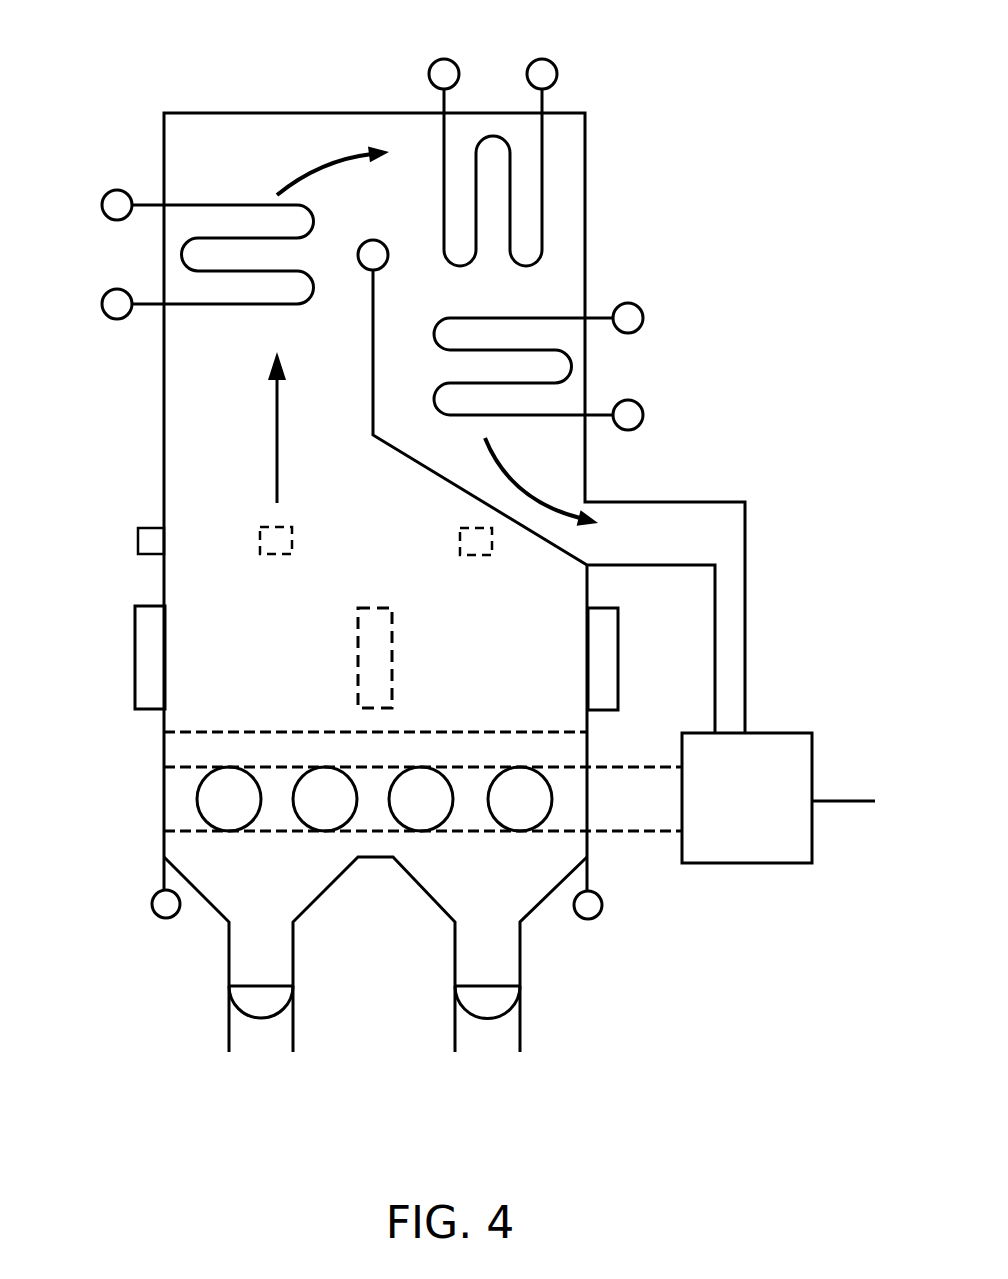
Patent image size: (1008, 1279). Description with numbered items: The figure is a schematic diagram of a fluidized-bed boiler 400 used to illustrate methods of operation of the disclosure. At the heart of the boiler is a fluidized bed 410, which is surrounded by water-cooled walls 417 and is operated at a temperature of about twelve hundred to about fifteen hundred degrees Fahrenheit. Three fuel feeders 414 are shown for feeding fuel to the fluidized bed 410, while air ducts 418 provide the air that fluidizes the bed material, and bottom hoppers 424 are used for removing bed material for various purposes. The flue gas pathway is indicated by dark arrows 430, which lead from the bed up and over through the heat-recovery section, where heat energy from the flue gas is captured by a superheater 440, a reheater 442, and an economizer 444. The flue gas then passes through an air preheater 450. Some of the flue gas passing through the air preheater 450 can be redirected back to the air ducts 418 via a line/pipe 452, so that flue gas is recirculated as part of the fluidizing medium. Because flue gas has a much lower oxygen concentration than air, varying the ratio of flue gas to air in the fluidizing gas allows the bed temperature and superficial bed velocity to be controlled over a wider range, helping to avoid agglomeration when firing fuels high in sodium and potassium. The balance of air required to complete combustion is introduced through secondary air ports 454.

The fluidized-bed boiler 400 is at (135, 69).
The fluidized bed 410 is at (312, 732).
The fuel feeders 414 is at (135, 672).
The water-cooled walls 417 is at (160, 855).
The air ducts 418 is at (203, 782).
The bottom hoppers 424 is at (230, 965).
The dark arrows 430 is at (290, 175).
The superheater 440 is at (215, 305).
The reheater 442 is at (440, 102).
The economizer 444 is at (598, 315).
The air preheater 450 is at (725, 811).
The line/pipe 452 is at (617, 792).
The secondary air ports 454 is at (138, 542).